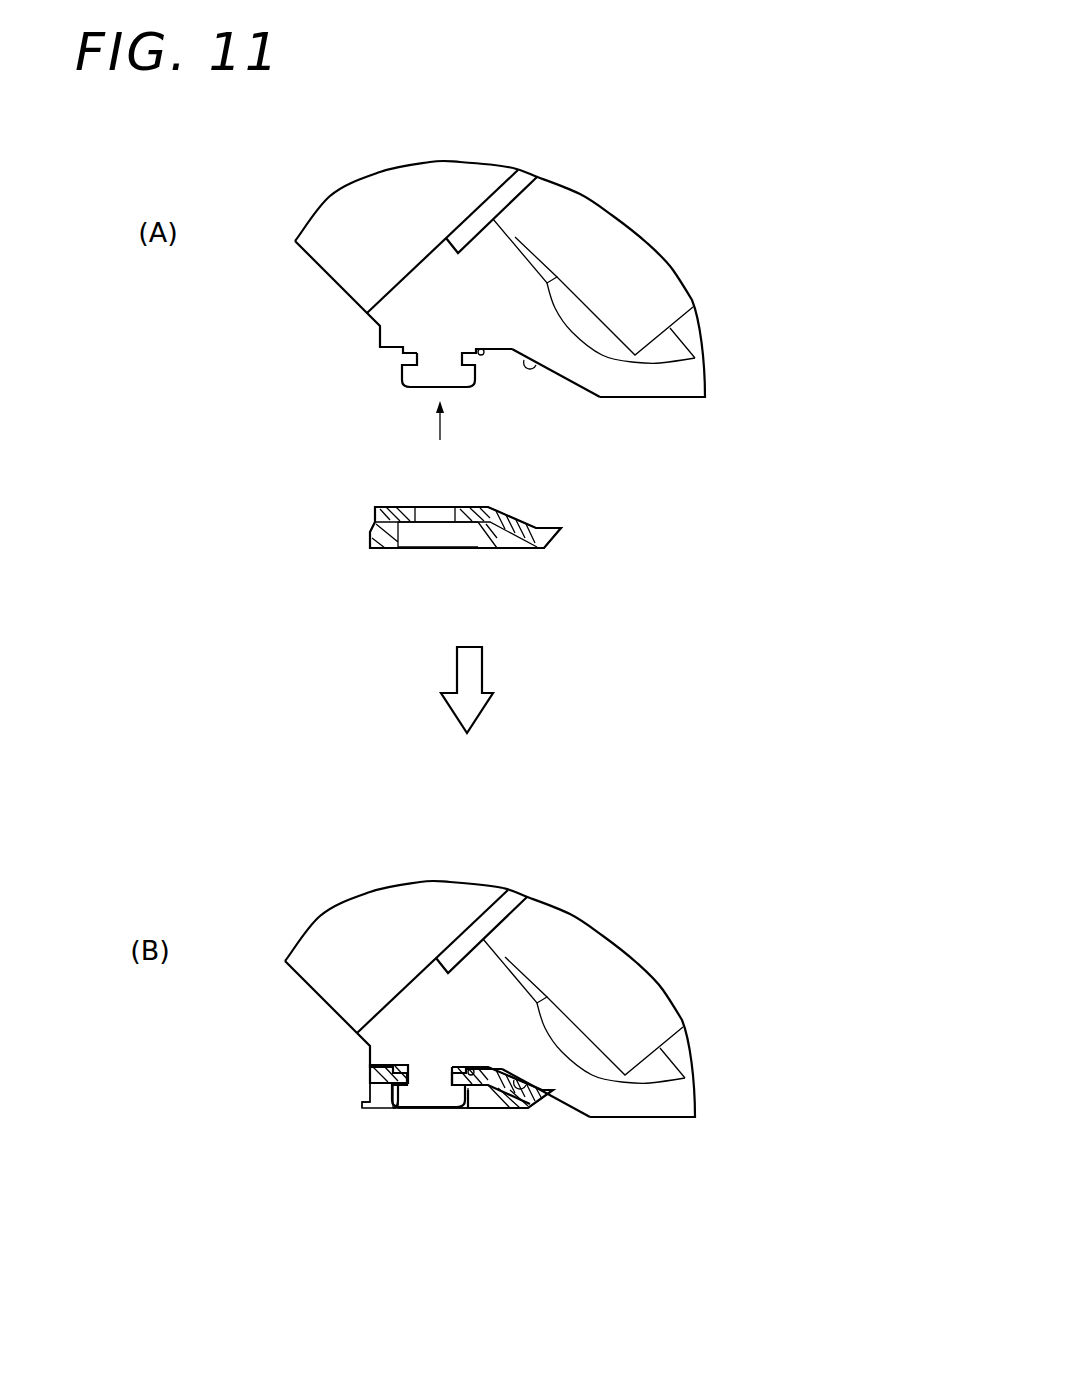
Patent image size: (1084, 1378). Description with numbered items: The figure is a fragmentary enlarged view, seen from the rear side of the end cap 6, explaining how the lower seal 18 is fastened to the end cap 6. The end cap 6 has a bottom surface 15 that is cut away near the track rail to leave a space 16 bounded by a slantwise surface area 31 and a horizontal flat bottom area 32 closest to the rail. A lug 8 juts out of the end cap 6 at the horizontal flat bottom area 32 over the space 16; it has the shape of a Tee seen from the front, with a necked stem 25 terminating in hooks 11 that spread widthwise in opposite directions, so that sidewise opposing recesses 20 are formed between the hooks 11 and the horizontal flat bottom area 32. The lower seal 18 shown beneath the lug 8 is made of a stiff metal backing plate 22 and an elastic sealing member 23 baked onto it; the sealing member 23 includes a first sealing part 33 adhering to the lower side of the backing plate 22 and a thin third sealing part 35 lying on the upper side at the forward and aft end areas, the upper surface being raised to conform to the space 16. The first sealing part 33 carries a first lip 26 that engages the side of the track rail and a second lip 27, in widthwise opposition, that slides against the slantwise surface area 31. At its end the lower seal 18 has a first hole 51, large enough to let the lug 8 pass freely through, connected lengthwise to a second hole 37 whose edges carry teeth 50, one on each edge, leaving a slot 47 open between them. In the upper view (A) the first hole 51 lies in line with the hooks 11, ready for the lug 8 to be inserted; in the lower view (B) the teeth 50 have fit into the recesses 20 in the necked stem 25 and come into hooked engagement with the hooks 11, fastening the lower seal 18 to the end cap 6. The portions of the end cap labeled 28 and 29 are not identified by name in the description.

The end cap 6 is at (485, 272).
The lug 8 is at (437, 378).
The hooks 11 is at (408, 378).
The bottom surface 15 is at (650, 398).
The space 16 is at (570, 380).
The lower seal 18 is at (366, 519).
The recesses 20 is at (413, 357).
The metal backing plate 22 is at (512, 521).
The sealing member 23 is at (495, 537).
The necked stem 25 is at (437, 353).
The first lip 26 is at (366, 545).
The second lip 27 is at (562, 528).
The first housing part 28 is at (390, 220).
The second housing part 29 is at (612, 245).
The slantwise surface area 31 is at (523, 358).
The horizontal flat bottom area 32 is at (395, 352).
The first sealing part 33 is at (484, 540).
The third sealing part 35 is at (374, 505).
The second hole 37 is at (441, 494).
The slot 47 is at (433, 515).
The teeth 50 is at (417, 512).
The first hole 51 is at (423, 537).